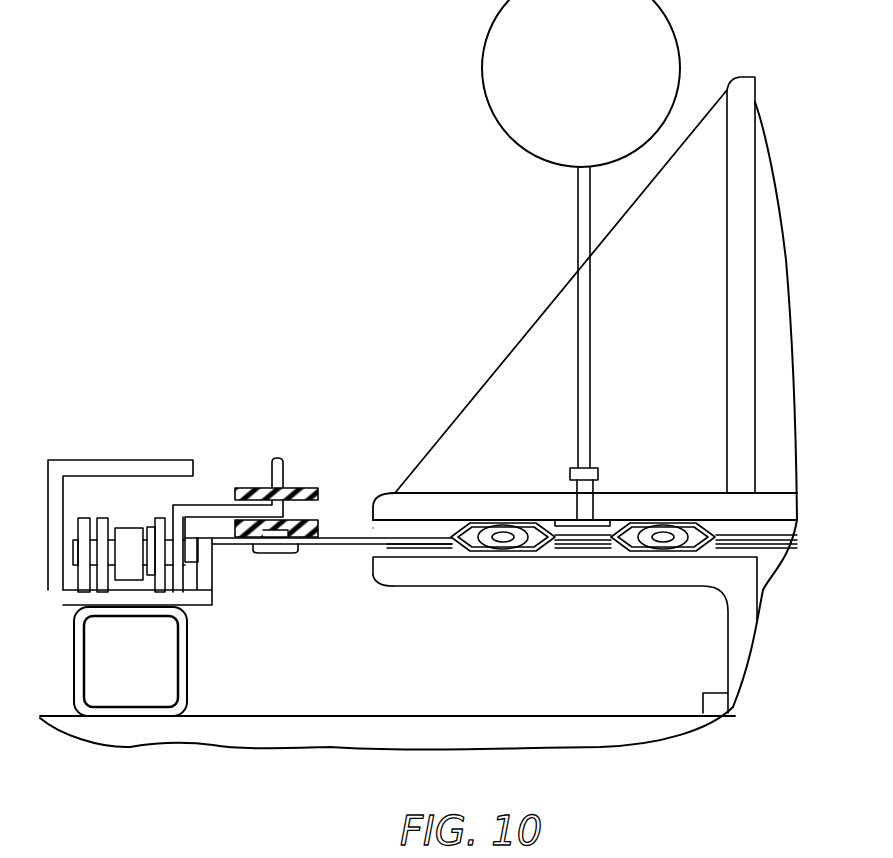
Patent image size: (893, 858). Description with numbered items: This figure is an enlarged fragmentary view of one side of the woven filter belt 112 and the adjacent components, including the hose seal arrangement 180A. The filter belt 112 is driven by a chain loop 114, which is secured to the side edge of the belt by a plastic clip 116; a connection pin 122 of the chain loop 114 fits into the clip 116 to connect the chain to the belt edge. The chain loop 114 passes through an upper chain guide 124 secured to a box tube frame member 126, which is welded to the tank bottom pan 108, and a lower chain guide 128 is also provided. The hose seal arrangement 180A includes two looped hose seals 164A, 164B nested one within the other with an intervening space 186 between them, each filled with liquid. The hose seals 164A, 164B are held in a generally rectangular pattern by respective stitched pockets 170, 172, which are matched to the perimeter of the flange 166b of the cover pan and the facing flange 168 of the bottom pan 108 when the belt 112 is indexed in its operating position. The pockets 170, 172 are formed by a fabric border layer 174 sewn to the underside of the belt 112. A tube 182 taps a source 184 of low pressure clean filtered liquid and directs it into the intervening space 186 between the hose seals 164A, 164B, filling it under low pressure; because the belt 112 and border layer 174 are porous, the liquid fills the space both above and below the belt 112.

The tank bottom pan 108 is at (706, 636).
The woven filter belt 112 is at (335, 545).
The chain loop 114 is at (126, 513).
The plastic clip 116 is at (247, 481).
The connection pin 122 is at (287, 472).
The upper chain guide 124 is at (58, 570).
The box tube frame member 126 is at (187, 693).
The lower chain guide 128 is at (358, 683).
The looped hose seal 164A is at (513, 548).
The looped hose seal 164B is at (650, 547).
The flange of the cover pan 166b is at (373, 528).
The facing flange of the bottom pan 168 is at (429, 558).
The stitched pocket 170 is at (457, 520).
The stitched pocket 172 is at (620, 517).
The fabric border layer 174 is at (405, 554).
The hose seal arrangement 180A is at (449, 521).
The tube 182 is at (577, 225).
The source of low pressure clean filtered liquid 184 is at (482, 88).
The intervening space 186 is at (557, 522).